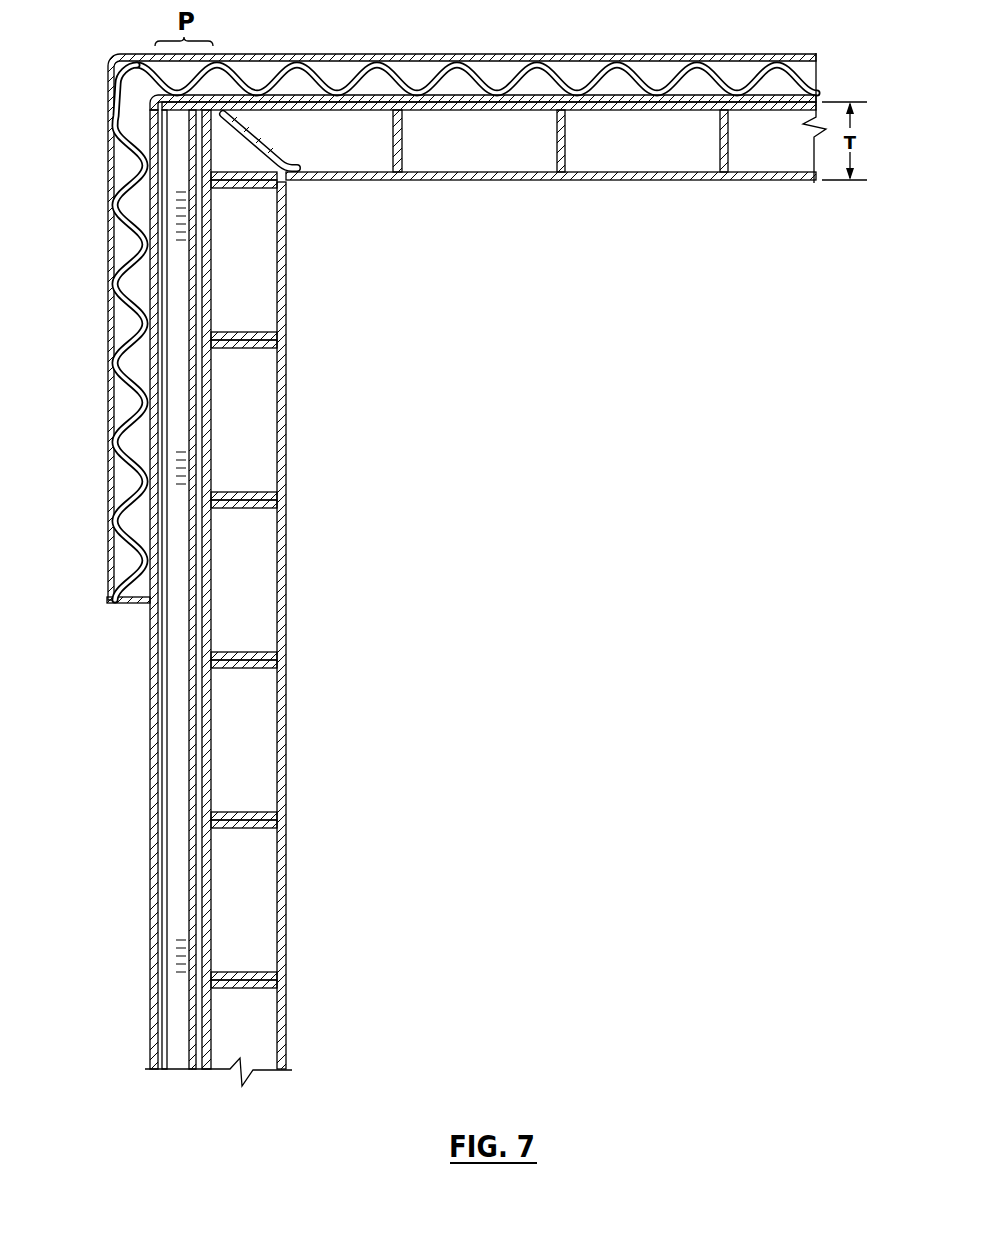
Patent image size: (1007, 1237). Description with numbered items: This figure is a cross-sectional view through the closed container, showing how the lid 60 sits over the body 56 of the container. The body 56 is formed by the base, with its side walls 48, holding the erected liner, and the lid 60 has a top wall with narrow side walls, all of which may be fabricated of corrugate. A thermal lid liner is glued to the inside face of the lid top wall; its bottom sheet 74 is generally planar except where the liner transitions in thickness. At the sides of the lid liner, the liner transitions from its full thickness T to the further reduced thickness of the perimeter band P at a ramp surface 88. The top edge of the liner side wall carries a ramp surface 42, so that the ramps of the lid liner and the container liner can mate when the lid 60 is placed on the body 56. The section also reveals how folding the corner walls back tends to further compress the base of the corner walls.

The lid 60 is at (448, 53).
The bottom sheet 74 is at (534, 183).
The ramp surface 88 is at (312, 150).
The ramp surface 42 is at (312, 150).
The side walls 48 is at (150, 710).
The body 56 is at (122, 886).